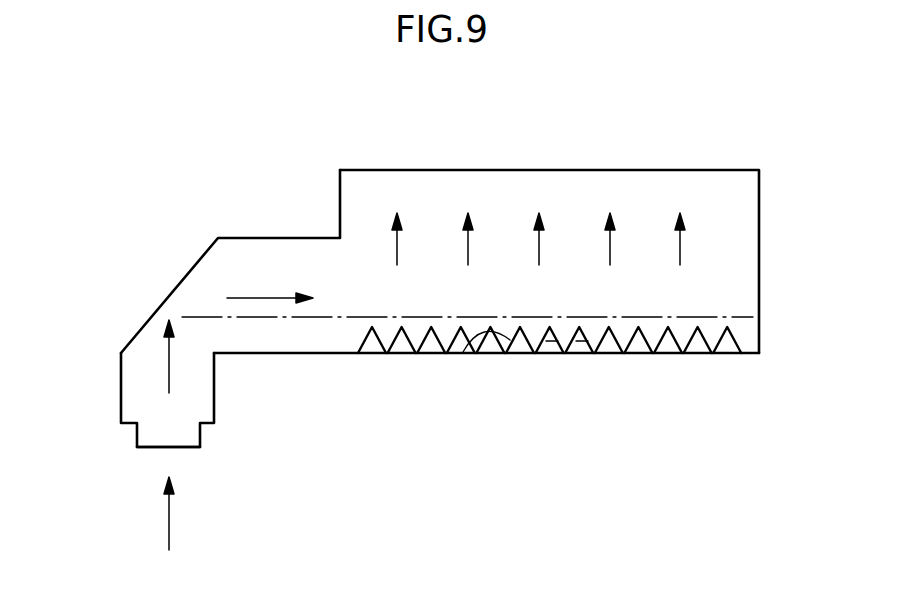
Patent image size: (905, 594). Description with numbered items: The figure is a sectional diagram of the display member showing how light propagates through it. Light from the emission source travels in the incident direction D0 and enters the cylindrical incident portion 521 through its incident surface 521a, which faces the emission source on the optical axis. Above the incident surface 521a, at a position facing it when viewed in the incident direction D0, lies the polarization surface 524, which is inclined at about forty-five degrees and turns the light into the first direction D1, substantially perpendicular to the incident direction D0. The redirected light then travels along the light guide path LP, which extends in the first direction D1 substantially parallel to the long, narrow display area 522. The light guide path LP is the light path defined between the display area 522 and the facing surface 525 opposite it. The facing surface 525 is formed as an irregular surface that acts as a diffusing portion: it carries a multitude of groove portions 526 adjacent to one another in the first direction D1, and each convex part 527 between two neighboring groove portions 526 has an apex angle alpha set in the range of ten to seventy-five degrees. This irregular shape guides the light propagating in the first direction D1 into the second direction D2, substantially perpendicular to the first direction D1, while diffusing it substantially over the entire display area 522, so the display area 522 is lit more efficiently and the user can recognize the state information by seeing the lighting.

The incident portion 521 is at (135, 437).
The incident surface 521a is at (147, 450).
The display area 522 is at (676, 170).
The polarization surface 524 is at (155, 310).
The facing surface 525 is at (695, 355).
The groove portions 526 is at (375, 348).
The convex part 527 is at (466, 352).
The apex angle alpha is at (548, 352).
The light guide path LP is at (725, 317).
The incident direction D0 is at (153, 435).
The first direction D1 is at (270, 286).
The second direction D2 is at (467, 245).